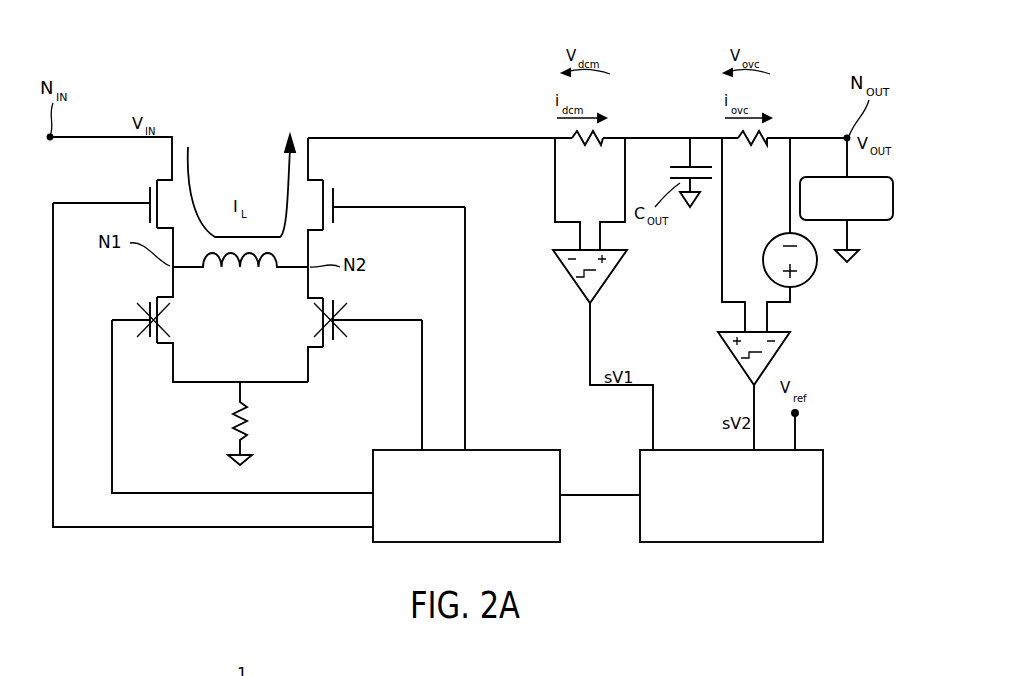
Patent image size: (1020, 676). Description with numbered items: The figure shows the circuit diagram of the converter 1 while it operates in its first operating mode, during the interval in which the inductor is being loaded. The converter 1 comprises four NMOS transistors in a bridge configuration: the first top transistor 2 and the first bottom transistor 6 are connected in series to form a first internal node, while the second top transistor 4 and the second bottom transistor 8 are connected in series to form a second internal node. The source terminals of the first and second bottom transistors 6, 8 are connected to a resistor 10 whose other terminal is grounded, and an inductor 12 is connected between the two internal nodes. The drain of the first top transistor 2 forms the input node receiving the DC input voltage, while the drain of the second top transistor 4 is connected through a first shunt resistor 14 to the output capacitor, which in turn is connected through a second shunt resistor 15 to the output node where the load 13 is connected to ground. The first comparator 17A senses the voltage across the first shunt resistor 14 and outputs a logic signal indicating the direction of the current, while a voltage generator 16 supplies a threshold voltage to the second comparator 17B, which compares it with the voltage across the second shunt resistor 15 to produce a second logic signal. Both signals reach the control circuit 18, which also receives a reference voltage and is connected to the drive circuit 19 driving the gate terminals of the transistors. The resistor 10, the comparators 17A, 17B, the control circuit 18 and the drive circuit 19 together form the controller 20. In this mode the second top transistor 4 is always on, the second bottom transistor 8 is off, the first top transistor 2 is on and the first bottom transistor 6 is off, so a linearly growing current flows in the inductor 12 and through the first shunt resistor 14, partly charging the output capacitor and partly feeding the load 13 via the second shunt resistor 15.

The converter 1 is at (243, 86).
The first top transistor 2 is at (148, 201).
The second top transistor 4 is at (337, 197).
The first bottom transistor 6 is at (140, 306).
The second bottom transistor 8 is at (340, 317).
The resistor 10 is at (250, 424).
The inductor 12 is at (248, 270).
The load 13 is at (880, 220).
The first shunt resistor 14 is at (597, 150).
The second shunt resistor 15 is at (758, 148).
The voltage generator 16 is at (772, 250).
The first comparator 17A is at (598, 283).
The second comparator 17B is at (780, 352).
The control circuit 18 is at (814, 485).
The drive circuit 19 is at (536, 450).
The controller 20 is at (767, 594).